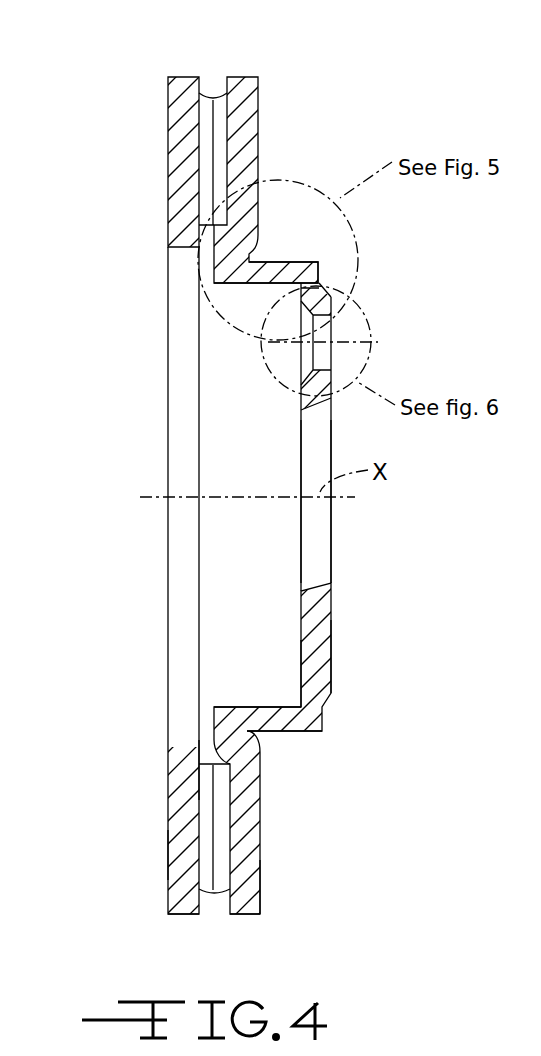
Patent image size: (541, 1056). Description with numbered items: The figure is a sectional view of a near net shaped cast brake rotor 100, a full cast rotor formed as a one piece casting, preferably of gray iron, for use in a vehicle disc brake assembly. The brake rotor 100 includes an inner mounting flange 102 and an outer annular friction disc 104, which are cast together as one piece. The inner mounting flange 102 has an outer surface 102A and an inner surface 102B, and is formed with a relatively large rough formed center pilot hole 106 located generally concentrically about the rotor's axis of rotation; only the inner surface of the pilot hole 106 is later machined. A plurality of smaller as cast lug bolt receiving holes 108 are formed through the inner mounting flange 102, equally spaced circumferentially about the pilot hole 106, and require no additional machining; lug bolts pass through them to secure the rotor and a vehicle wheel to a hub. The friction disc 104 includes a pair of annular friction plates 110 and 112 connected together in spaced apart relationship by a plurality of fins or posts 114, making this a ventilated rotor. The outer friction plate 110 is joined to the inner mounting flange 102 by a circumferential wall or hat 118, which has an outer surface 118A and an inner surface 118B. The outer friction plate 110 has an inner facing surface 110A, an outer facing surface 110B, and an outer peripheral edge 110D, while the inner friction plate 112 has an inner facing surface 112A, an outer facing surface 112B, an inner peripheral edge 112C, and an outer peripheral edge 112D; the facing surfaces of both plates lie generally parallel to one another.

The near net shaped cast brake rotor 100 is at (365, 635).
The inner mounting flange 102 is at (287, 633).
The outer surface 102A is at (333, 667).
The inner surface 102B is at (301, 680).
The outer annular friction disc 104 is at (272, 128).
The center pilot hole 106 is at (315, 583).
The lug bolt receiving holes 108 is at (324, 362).
The outer friction plate 110 is at (243, 78).
The inner facing surface 110A is at (232, 848).
The outer facing surface 110B is at (263, 892).
The outer peripheral edge 110D is at (247, 916).
The inner friction plate 112 is at (183, 78).
The inner facing surface 112A is at (203, 797).
The outer facing surface 112B is at (169, 852).
The inner peripheral edge 112C is at (193, 748).
The outer peripheral edge 112D is at (183, 916).
The fins or posts 114 is at (221, 100).
The circumferential wall or hat 118 is at (268, 268).
The outer surface 118A is at (282, 732).
The inner surface 118B is at (272, 707).